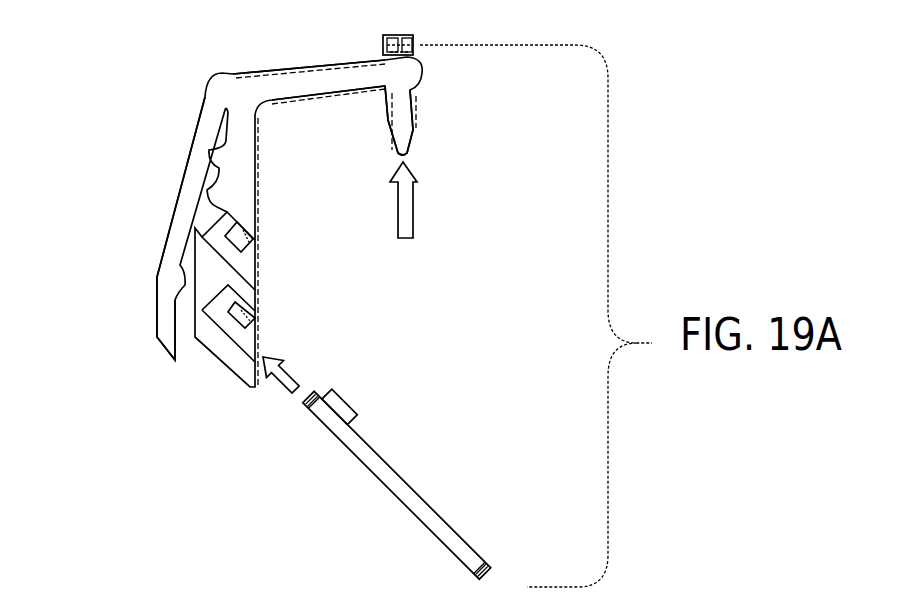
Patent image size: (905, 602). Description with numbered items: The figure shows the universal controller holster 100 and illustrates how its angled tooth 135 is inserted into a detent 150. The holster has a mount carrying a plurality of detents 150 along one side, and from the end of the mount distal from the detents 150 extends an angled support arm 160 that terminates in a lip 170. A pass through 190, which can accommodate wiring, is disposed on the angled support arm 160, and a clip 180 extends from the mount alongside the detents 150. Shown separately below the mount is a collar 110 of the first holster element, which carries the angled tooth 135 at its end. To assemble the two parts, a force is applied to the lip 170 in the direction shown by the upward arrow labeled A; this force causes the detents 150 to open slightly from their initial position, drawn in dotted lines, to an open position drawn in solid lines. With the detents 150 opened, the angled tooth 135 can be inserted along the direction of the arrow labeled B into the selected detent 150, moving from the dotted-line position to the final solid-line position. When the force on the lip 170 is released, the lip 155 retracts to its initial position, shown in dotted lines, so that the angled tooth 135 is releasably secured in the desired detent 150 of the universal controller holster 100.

The universal controller holster 100 is at (178, 97).
The collar 110 is at (400, 497).
The angled tooth 135 is at (337, 400).
The detent 150 is at (255, 330).
The lip 155 is at (233, 302).
The angled support arm 160 is at (290, 82).
The lip 170 is at (405, 137).
The clip 180 is at (163, 302).
The pass through 190 is at (385, 37).